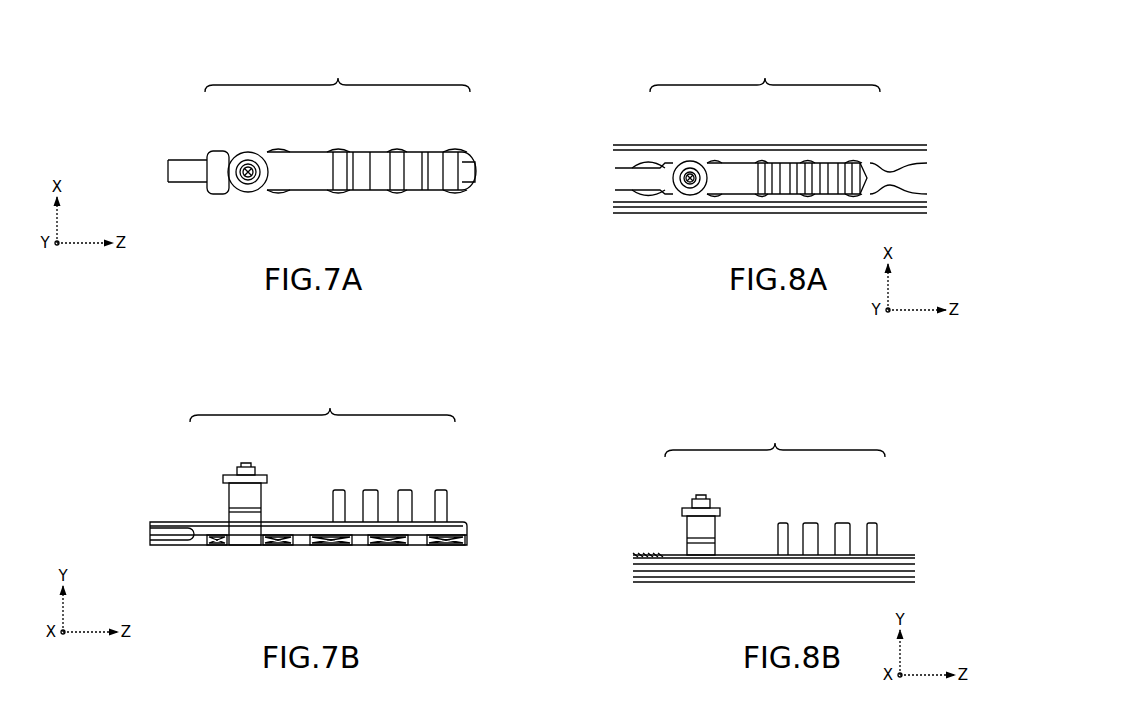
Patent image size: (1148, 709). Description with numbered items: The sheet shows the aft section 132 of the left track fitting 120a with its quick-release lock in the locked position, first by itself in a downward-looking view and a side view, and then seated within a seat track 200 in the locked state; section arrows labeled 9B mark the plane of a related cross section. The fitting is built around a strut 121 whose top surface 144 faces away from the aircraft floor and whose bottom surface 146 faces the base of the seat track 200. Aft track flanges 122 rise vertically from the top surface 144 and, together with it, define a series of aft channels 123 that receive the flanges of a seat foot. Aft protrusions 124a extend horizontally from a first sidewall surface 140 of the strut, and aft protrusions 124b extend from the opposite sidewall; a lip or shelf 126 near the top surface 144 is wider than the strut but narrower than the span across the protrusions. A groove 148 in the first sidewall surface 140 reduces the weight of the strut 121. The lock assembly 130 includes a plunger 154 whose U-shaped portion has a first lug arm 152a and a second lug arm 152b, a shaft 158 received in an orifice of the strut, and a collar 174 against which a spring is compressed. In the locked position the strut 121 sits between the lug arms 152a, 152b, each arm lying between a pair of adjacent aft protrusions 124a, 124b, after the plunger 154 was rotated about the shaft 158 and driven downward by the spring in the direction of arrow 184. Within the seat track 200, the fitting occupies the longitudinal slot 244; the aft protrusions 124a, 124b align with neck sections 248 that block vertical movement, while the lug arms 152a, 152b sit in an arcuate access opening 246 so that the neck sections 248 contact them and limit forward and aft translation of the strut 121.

In FIG. 7A, the left track fitting 120a is at (155, 103).
In FIG. 8A, the left track fitting 120a is at (635, 172).
In FIG. 7B, the left track fitting 120a is at (150, 445).
In FIG. 8B, the left track fitting 120a is at (884, 548).
In FIG. 7A, the strut 121 is at (182, 186).
In FIG. 8A, the strut 121 is at (864, 185).
In FIG. 7A, the aft track flanges 122 is at (452, 160).
In FIG. 8A, the aft track flanges 122 is at (820, 170).
In FIG. 7B, the aft track flanges 122 is at (372, 500).
In FIG. 8B, the aft track flanges 122 is at (808, 528).
In FIG. 7A, the aft channels 123 is at (386, 166).
In FIG. 8A, the aft channels 123 is at (806, 186).
In FIG. 7B, the aft channels 123 is at (388, 500).
In FIG. 8B, the aft channels 123 is at (825, 532).
In FIG. 7A, the aft protrusions 124a is at (213, 194).
In FIG. 8A, the aft protrusions 124a is at (662, 198).
In FIG. 7B, the aft protrusions 124a is at (216, 546).
In FIG. 7A, the aft protrusions 124b is at (212, 150).
In FIG. 8A, the aft protrusions 124b is at (662, 160).
In FIG. 7A, the shelf 126 is at (318, 152).
In FIG. 7B, the shelf 126 is at (308, 521).
In FIG. 8B, the shelf 126 is at (750, 554).
In FIG. 7B, the lock assembly 130 is at (228, 466).
In FIG. 7A, the aft section 132 is at (337, 73).
In FIG. 8A, the aft section 132 is at (765, 73).
In FIG. 7B, the aft section 132 is at (322, 404).
In FIG. 8B, the aft section 132 is at (775, 438).
In FIG. 7B, the first sidewall surface 140 is at (458, 531).
In FIG. 7A, the top surface 144 is at (300, 179).
In FIG. 8A, the top surface 144 is at (720, 185).
In FIG. 7B, the top surface 144 is at (160, 520).
In FIG. 8B, the top surface 144 is at (641, 553).
In FIG. 8B, the bottom surface 146 is at (773, 583).
In FIG. 7B, the groove 148 is at (150, 533).
In FIG. 7A, the first lug arm 152a is at (246, 193).
In FIG. 8A, the first lug arm 152a is at (690, 195).
In FIG. 7B, the first lug arm 152a is at (250, 532).
In FIG. 8B, the first lug arm 152a is at (700, 556).
In FIG. 7A, the second lug arm 152b is at (243, 152).
In FIG. 8A, the second lug arm 152b is at (690, 161).
In FIG. 7A, the plunger 154 is at (234, 172).
In FIG. 7B, the plunger 154 is at (240, 491).
In FIG. 8B, the plunger 154 is at (692, 525).
In FIG. 7B, the shaft 158 is at (248, 465).
In FIG. 8B, the shaft 158 is at (702, 498).
In FIG. 7B, the collar 174 is at (263, 478).
In FIG. 8B, the collar 174 is at (718, 508).
In FIG. 7B, the arrow 184 is at (240, 627).
In FIG. 8B, the seat track 200 is at (835, 583).
In FIG. 8A, the slot 244 is at (900, 180).
In FIG. 8A, the arcuate access openings 246 is at (880, 160).
In FIG. 8A, the neck sections 248 is at (800, 134).
In FIG. 7A, the section line 9B is at (236, 135).